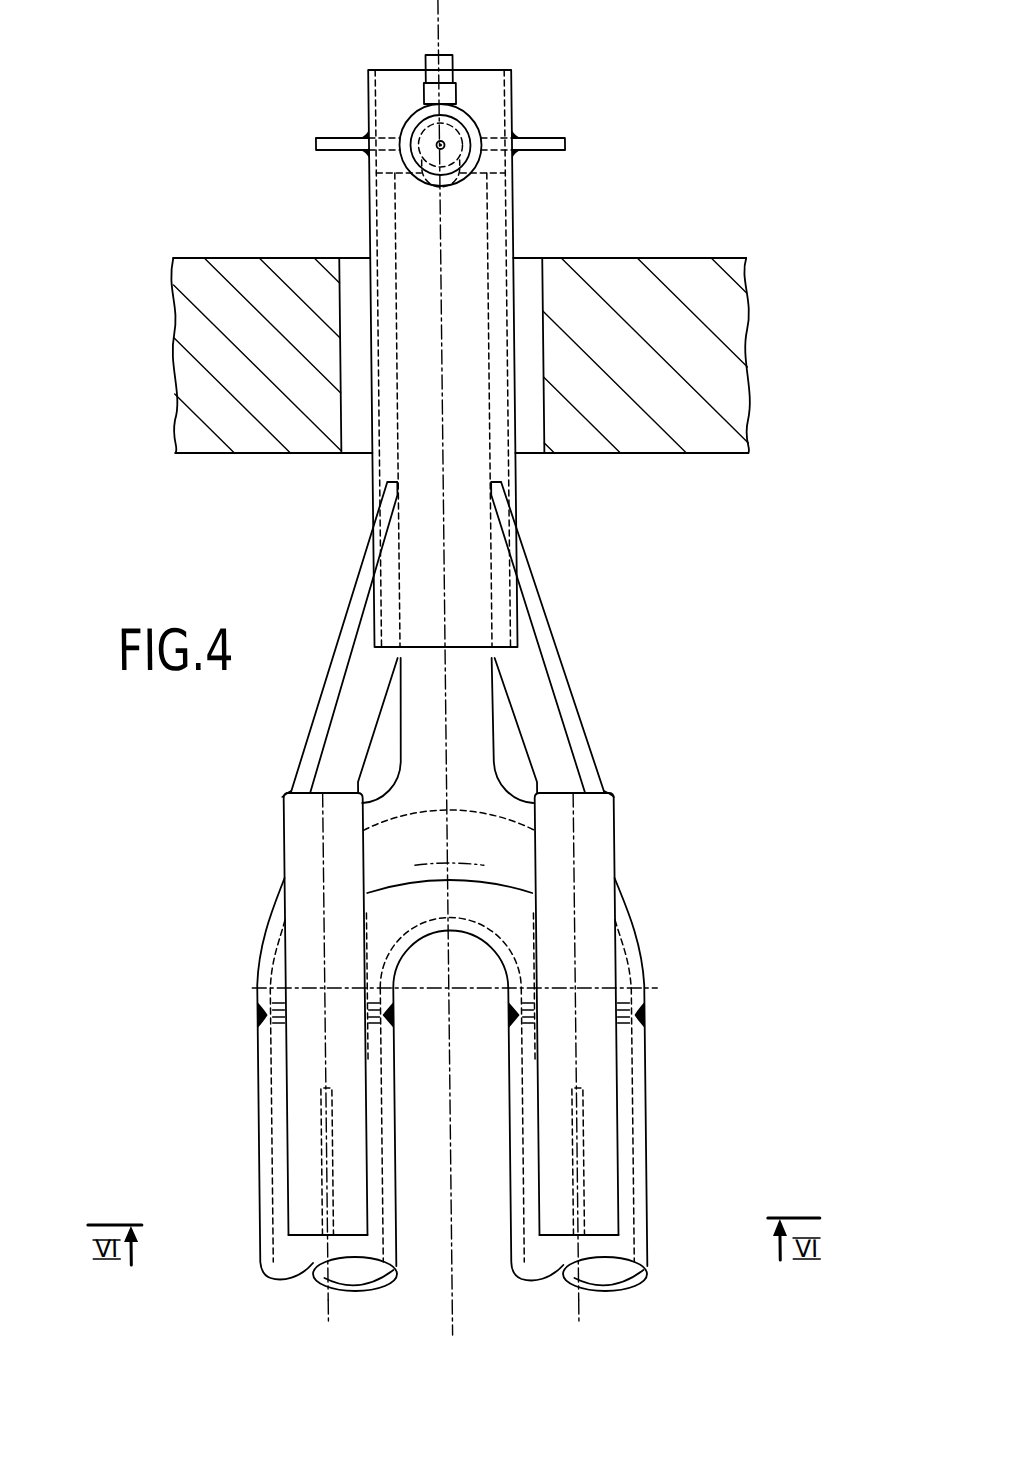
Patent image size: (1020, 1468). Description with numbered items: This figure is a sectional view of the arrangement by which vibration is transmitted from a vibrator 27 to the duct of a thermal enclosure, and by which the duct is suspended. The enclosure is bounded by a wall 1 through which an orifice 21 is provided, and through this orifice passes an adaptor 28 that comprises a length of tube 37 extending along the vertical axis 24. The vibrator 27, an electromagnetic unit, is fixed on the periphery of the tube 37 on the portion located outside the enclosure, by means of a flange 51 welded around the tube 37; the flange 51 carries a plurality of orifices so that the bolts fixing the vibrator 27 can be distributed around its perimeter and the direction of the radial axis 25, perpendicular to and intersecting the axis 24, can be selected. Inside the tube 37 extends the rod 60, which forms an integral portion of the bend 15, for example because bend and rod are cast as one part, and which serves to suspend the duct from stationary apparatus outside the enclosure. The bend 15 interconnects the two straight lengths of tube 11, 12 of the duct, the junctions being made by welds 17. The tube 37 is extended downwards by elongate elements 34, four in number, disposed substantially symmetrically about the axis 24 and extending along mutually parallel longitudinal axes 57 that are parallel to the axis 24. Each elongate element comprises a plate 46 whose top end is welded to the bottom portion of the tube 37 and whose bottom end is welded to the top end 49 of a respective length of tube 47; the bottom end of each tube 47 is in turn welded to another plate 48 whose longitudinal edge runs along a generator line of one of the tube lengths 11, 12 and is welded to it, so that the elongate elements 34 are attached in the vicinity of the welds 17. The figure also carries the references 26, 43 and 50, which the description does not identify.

The wall 1 is at (207, 287).
The straight length of tube 11 is at (250, 1160).
The straight length of tube 12 is at (628, 1166).
The bend 15 is at (414, 950).
The welds 17 is at (250, 1016).
The orifice 21 is at (352, 272).
The axis 24 is at (444, 1255).
The radial axis 25 is at (444, 140).
The pin axis 26 is at (316, 1313).
The vibrator 27 is at (404, 110).
The adaptor 28 is at (498, 637).
The elongate elements 34 is at (606, 740).
The length of tube 37 is at (515, 253).
The bore 43 is at (462, 193).
The plate 46 is at (338, 633).
The length of tube 47 is at (290, 854).
The plates 48 is at (300, 1125).
The top end 49 is at (282, 790).
The end face 50 is at (285, 1243).
The flange 51 is at (546, 134).
The longitudinal axes 57 is at (314, 911).
The rod 60 is at (497, 237).